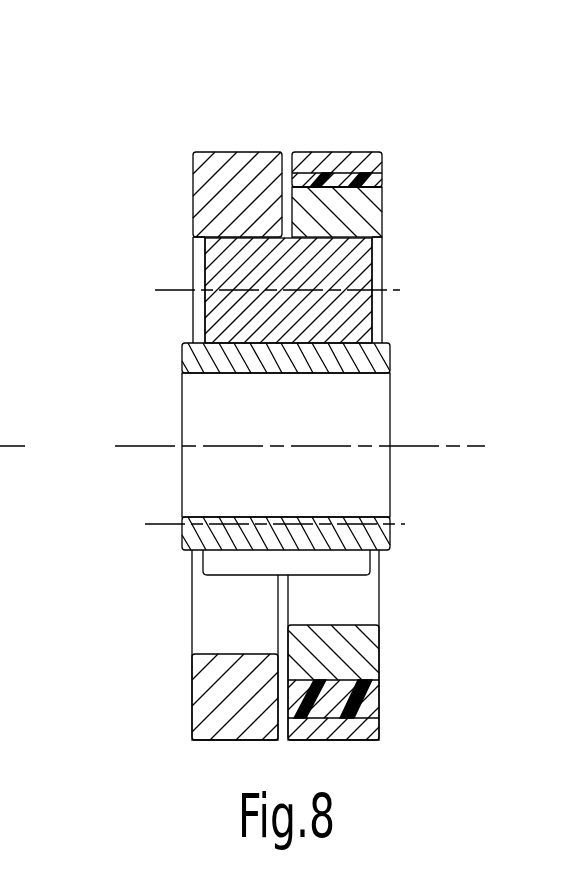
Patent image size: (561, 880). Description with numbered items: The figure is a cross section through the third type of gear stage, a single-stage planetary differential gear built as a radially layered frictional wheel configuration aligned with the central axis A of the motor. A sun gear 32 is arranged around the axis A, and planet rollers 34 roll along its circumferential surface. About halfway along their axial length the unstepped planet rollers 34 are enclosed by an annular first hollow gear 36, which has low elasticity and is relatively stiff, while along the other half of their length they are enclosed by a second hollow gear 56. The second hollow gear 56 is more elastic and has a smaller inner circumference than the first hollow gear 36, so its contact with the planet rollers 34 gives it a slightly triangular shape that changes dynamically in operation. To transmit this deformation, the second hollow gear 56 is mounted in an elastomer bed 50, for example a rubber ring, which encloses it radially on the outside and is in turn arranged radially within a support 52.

The sun gear 32 is at (183, 348).
The planet rollers 34 is at (340, 262).
The first hollow gear 36 is at (232, 190).
The elastomer bed 50 is at (372, 694).
The support 52 is at (345, 165).
The second hollow gear 56 is at (350, 213).
The central axis A is at (440, 447).